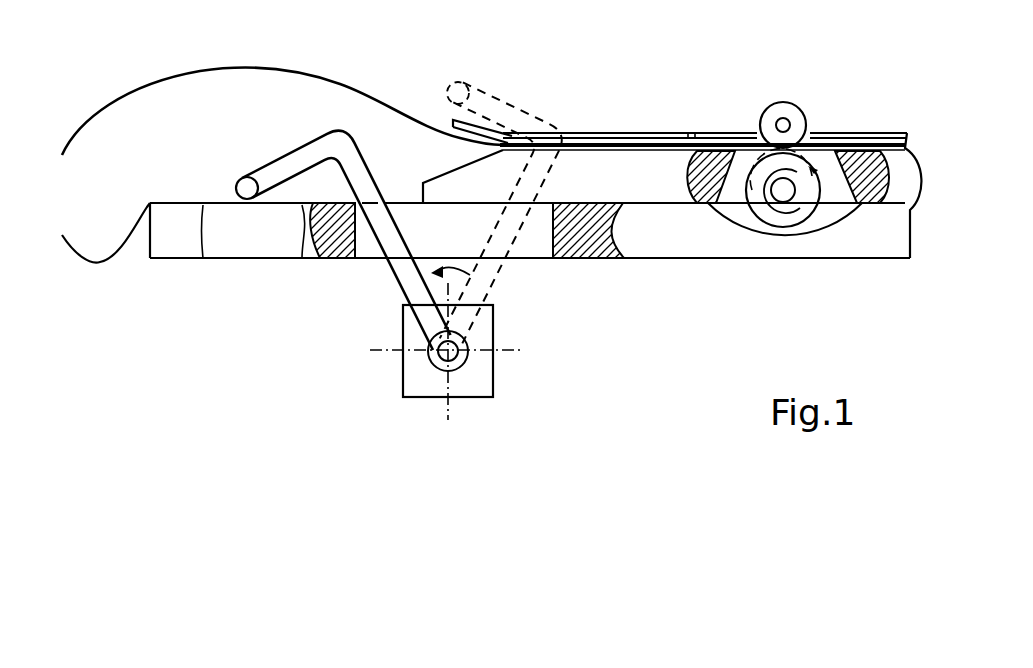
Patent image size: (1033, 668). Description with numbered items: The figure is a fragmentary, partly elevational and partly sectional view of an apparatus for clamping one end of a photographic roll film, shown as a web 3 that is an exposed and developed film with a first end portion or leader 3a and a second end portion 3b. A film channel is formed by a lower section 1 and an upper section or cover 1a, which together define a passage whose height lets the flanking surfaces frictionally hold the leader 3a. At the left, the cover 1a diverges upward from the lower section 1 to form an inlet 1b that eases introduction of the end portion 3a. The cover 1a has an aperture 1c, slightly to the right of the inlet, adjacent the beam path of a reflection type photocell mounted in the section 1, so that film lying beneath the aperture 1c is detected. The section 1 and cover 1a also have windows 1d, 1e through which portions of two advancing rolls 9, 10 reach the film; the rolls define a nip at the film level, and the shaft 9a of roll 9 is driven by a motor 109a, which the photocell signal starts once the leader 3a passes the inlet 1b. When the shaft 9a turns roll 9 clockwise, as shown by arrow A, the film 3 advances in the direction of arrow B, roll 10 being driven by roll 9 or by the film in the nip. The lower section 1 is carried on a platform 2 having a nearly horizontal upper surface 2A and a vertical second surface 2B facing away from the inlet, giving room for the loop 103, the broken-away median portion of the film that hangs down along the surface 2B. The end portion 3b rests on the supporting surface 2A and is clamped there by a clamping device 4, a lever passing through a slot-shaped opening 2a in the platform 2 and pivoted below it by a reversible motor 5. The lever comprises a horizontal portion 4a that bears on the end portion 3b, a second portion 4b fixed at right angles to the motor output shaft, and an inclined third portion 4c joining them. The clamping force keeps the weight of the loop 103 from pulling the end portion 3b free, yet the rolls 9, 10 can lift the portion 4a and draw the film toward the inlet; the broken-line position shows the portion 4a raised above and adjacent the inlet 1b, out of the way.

The lower section 1 is at (650, 188).
The upper section or cover 1a is at (713, 133).
The inlet 1b is at (457, 167).
The aperture 1c is at (690, 133).
The window 1d is at (914, 182).
The window 1e is at (812, 136).
The platform 2 is at (335, 193).
The slot-shaped opening 2a is at (403, 203).
The upper surface 2A is at (203, 258).
The second surface 2B is at (150, 247).
The web 3 is at (281, 64).
The first end portion 3a is at (628, 145).
The second end portion 3b is at (302, 258).
The clamping device 4 is at (384, 270).
The horizontal portion 4a is at (235, 188).
The second portion 4b is at (418, 290).
The third portion 4c is at (270, 163).
The motor 5 is at (487, 380).
The advancing roll 9 is at (805, 197).
The shaft 9a is at (812, 205).
The advancing roll 10 is at (788, 114).
The loop 103 is at (83, 118).
The motor 109a is at (787, 210).
The arrow A is at (762, 187).
The arrow B is at (228, 80).